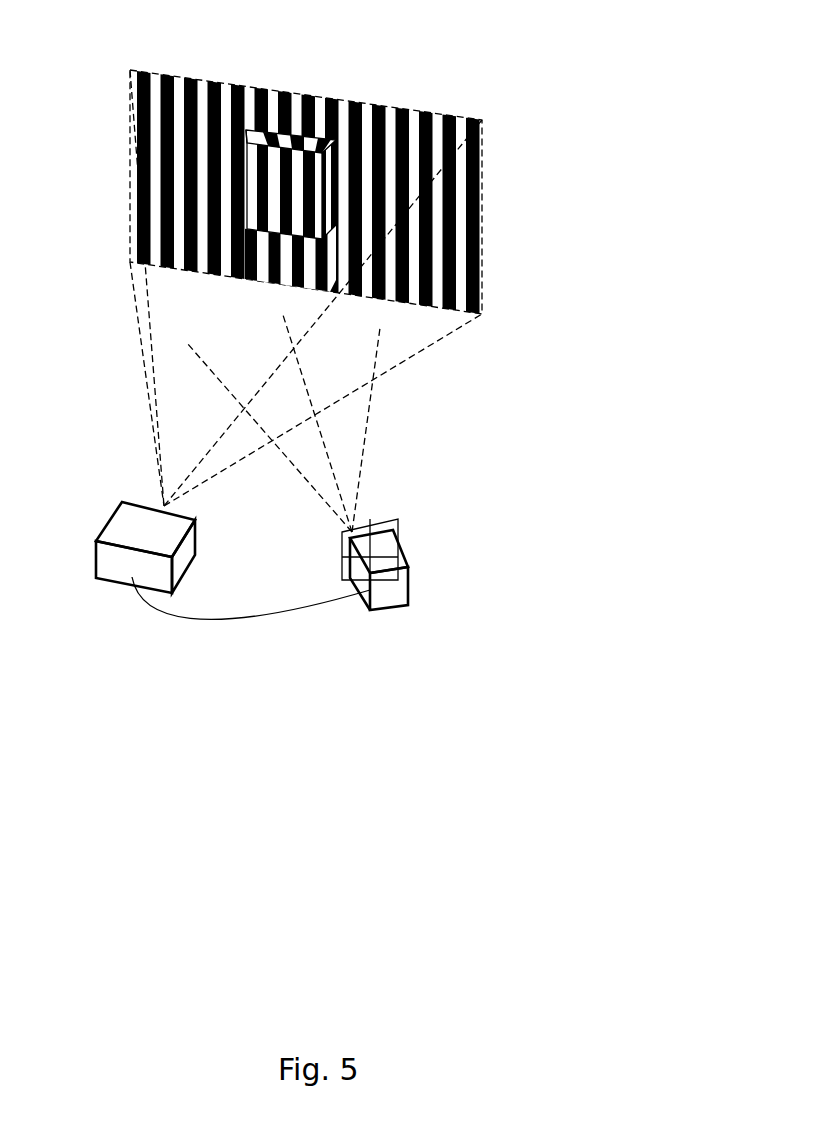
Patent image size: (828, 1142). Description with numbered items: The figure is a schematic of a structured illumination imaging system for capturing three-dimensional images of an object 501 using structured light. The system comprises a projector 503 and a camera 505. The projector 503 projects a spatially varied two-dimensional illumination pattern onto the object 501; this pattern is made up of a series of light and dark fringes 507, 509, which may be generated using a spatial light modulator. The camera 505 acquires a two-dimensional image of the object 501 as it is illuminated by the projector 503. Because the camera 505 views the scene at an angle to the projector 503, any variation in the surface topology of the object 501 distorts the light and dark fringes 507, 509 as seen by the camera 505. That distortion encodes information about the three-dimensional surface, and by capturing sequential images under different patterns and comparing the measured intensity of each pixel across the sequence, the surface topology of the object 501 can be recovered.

The object 501 is at (293, 130).
The projector 503 is at (118, 571).
The camera 505 is at (390, 598).
The light fringe 507 is at (175, 68).
The dark fringe 509 is at (213, 78).